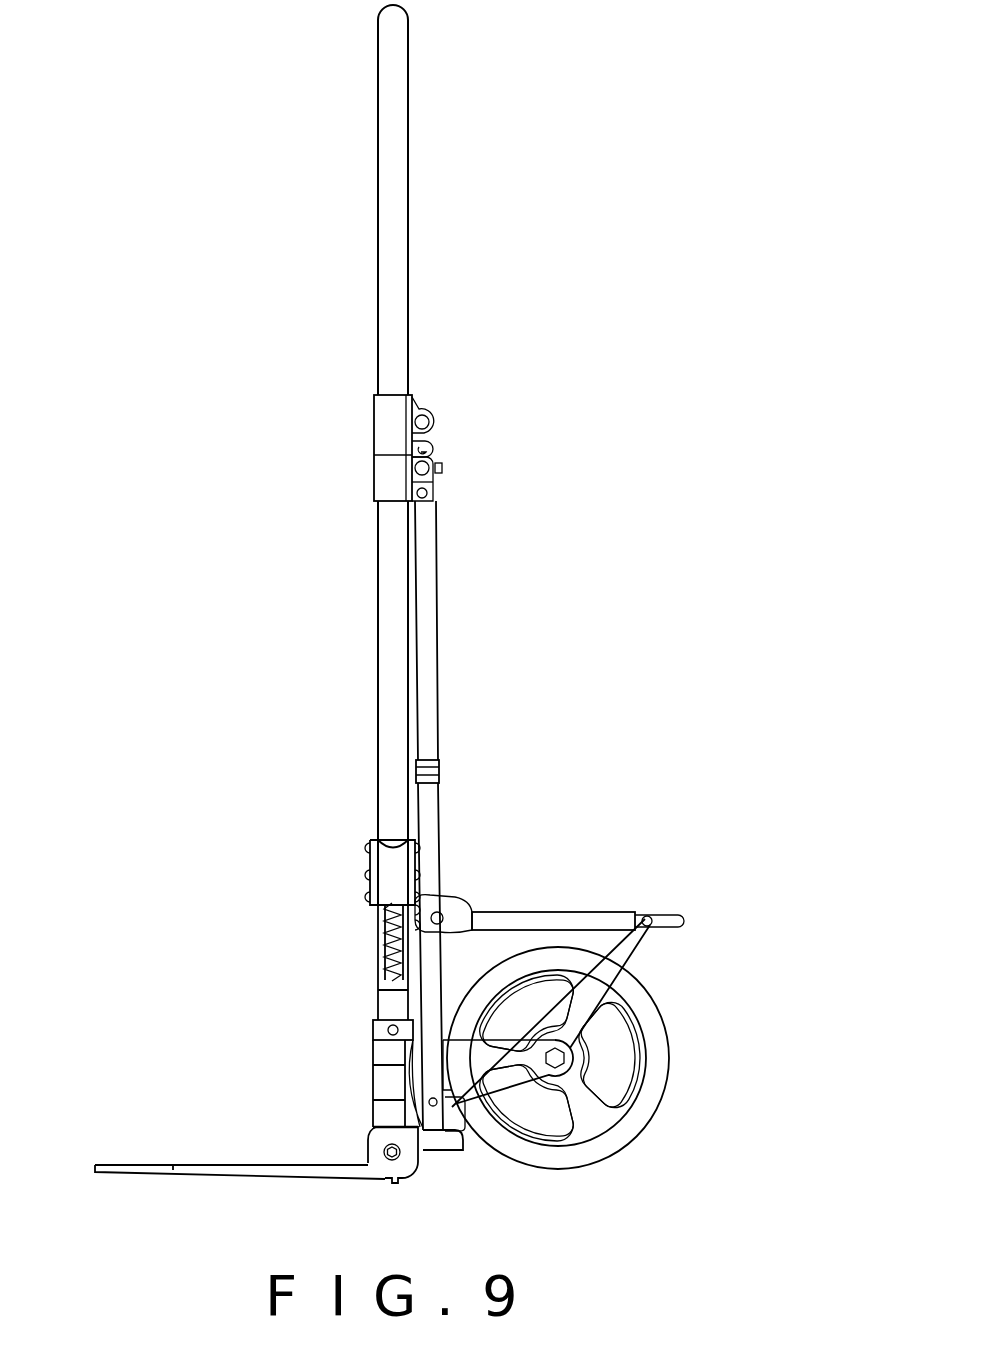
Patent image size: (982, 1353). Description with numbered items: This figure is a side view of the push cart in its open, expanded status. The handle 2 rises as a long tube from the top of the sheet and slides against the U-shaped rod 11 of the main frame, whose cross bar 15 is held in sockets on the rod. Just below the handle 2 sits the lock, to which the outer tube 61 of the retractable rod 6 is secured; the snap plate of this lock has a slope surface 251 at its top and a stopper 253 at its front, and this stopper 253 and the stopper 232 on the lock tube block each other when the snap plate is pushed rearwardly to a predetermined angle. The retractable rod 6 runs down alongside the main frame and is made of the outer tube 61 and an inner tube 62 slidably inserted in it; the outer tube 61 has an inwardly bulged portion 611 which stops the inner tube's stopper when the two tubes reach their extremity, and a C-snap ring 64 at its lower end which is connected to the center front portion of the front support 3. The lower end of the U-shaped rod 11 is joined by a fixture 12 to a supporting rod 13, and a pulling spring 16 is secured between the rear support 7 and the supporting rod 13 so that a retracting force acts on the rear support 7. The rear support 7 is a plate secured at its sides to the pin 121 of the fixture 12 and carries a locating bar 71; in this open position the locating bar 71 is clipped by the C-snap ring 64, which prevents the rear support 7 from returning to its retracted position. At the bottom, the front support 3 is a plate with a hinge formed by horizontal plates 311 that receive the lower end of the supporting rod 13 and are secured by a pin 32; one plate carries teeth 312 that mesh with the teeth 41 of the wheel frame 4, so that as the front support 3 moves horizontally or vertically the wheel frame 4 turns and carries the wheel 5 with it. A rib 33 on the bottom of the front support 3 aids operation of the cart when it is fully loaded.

The handle 2 is at (390, 207).
The U-shaped rod 11 is at (392, 543).
The slope surface 251 is at (423, 407).
The cross bar 15 is at (431, 419).
The stopper 232 is at (437, 455).
The stopper 253 is at (442, 472).
The retractable rod 6 is at (513, 815).
The outer tube 61 is at (436, 652).
The bulge portion 611 is at (439, 765).
The inner tube 62 is at (460, 956).
The fixture 12 is at (372, 867).
The pulling spring 16 is at (390, 960).
The supporting rod 13 is at (390, 998).
The teeth 41 is at (370, 1127).
The horizontal plate 311 is at (422, 1160).
The pin 121 is at (432, 914).
The rear support 7 is at (595, 920).
The locating bar 71 is at (630, 945).
The wheel 5 is at (637, 1113).
The wheel frame 4 is at (503, 1078).
The C-snap ring 64 is at (455, 1132).
The rib 33 is at (400, 1180).
The teeth 312 is at (370, 1140).
The pin 32 is at (392, 1160).
The front support 3 is at (230, 1168).